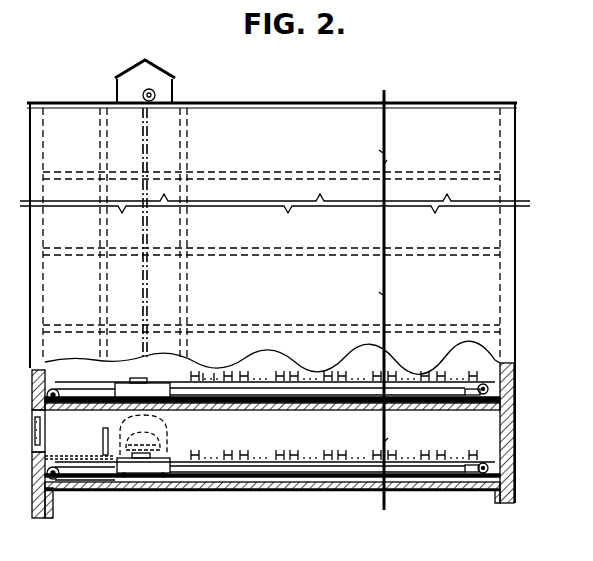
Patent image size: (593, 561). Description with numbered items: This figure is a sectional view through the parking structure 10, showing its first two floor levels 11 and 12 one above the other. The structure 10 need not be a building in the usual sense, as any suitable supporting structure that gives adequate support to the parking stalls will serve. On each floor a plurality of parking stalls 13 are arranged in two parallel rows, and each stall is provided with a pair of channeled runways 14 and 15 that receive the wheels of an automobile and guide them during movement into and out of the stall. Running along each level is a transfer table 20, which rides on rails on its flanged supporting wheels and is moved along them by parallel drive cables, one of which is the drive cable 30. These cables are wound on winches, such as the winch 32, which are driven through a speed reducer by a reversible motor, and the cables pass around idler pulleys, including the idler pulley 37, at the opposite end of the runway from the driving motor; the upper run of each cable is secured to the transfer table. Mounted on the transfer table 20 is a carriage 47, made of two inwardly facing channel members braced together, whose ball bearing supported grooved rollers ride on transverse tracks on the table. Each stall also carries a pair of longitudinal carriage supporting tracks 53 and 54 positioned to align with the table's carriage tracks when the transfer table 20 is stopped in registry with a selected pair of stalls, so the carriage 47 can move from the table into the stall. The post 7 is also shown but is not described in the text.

The support post 7 is at (387, 300).
The structure 10 is at (517, 183).
The floor level 11 is at (502, 466).
The floor level 12 is at (440, 395).
The parking stall 13 is at (453, 448).
The channeled runway 14 is at (340, 449).
The channeled runway 15 is at (375, 450).
The transfer table 20 is at (115, 387).
The drive cable 30 is at (238, 480).
The winch 32 is at (60, 487).
The idler pulley 37 is at (488, 388).
The carriage 47 is at (137, 378).
The carriage supporting track 53 is at (207, 378).
The carriage supporting track 54 is at (212, 378).